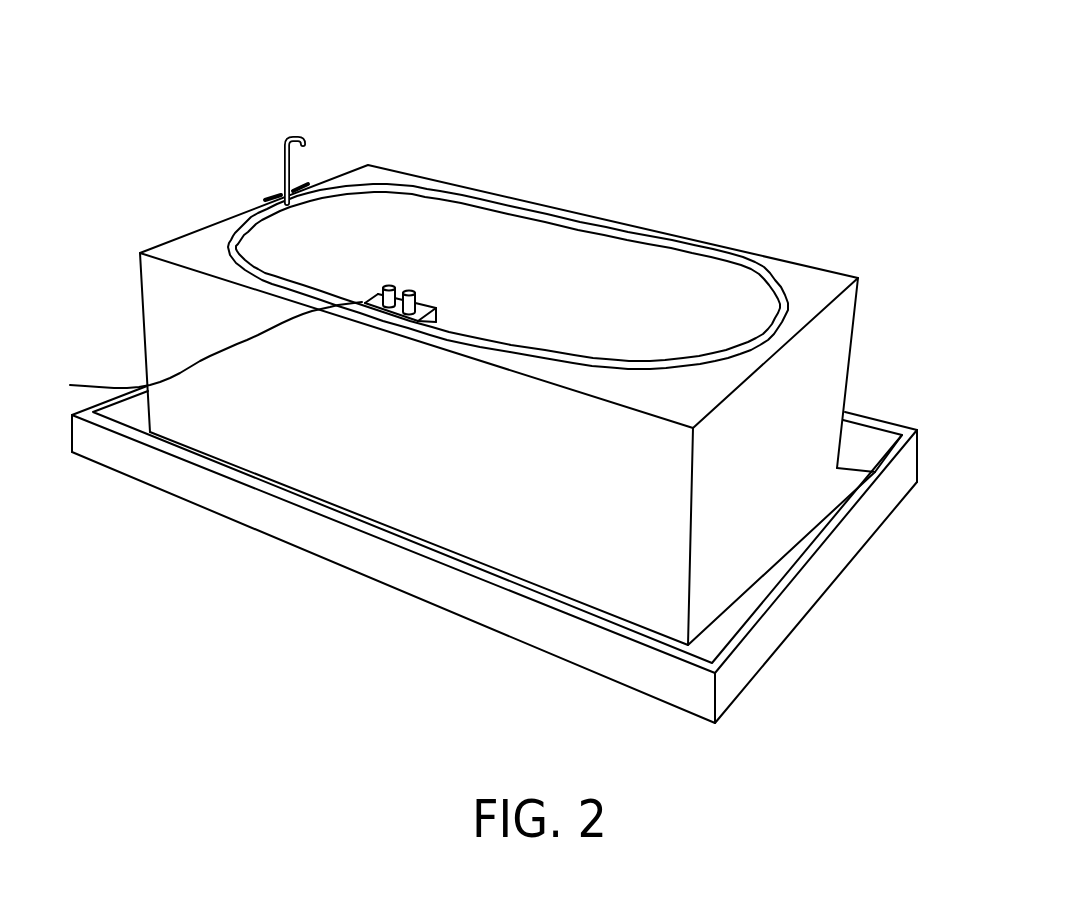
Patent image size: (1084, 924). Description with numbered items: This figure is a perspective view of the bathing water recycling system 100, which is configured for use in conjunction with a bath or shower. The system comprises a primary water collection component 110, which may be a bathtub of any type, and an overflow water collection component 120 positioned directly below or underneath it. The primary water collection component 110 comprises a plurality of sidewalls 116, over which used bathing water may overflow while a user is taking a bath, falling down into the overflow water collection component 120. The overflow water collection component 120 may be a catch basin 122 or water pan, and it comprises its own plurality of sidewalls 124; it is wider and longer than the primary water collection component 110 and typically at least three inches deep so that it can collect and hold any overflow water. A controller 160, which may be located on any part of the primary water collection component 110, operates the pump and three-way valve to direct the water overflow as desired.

The bathing water recycling system 100 is at (500, 422).
The primary water collection component 110 is at (519, 178).
The plurality of sidewalls 116 is at (412, 455).
The overflow water collection component 120 is at (516, 515).
The catch basin 122 is at (862, 438).
The plurality of sidewalls 124 is at (773, 635).
The controller 160 is at (201, 345).